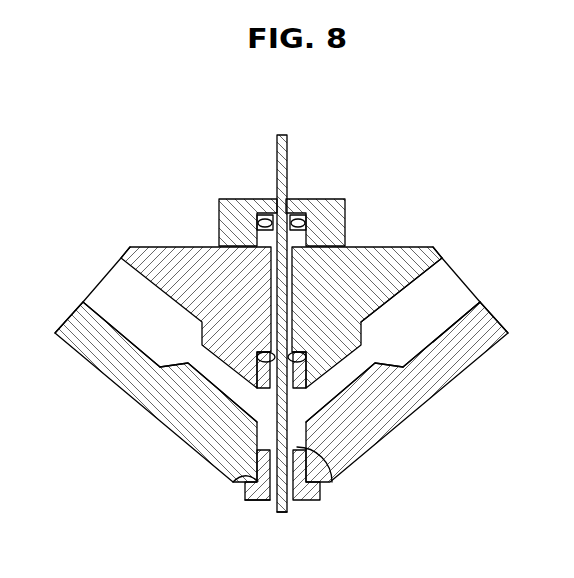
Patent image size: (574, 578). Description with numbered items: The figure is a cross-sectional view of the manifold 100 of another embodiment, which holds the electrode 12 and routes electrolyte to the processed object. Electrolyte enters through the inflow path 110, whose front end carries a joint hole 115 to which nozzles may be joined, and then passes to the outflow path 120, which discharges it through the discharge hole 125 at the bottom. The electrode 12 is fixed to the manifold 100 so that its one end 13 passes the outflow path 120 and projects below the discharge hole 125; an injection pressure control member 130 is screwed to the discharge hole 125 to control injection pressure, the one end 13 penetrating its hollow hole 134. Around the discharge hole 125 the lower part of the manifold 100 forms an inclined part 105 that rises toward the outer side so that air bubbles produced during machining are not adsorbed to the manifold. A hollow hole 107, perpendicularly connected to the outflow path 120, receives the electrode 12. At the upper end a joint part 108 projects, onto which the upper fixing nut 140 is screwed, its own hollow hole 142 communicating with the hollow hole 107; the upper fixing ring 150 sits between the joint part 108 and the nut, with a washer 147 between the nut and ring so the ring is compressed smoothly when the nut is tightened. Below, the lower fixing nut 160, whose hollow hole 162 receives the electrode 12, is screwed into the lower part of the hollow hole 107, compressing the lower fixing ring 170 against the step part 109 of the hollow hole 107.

The manifold 100 is at (65, 178).
The electrode 12 is at (287, 149).
The one end of the electrode 13 is at (281, 514).
The inclined part 105 is at (133, 403).
The hollow hole 107 is at (272, 267).
The joint part 108 is at (400, 285).
The step part 109 is at (383, 332).
The inflow path 110 is at (203, 378).
The joint hole 115 is at (135, 330).
The outflow path 120 is at (322, 483).
The discharge hole 125 is at (247, 484).
The injection pressure control member 130 is at (244, 493).
The hollow hole 134 is at (273, 502).
The upper fixing nut 140 is at (228, 217).
The hollow hole 142 is at (275, 203).
The washer 147 is at (303, 217).
The upper fixing ring 150 is at (292, 221).
The lower fixing nut 160 is at (253, 386).
The hollow hole 162 is at (256, 350).
The lower fixing ring 170 is at (413, 314).